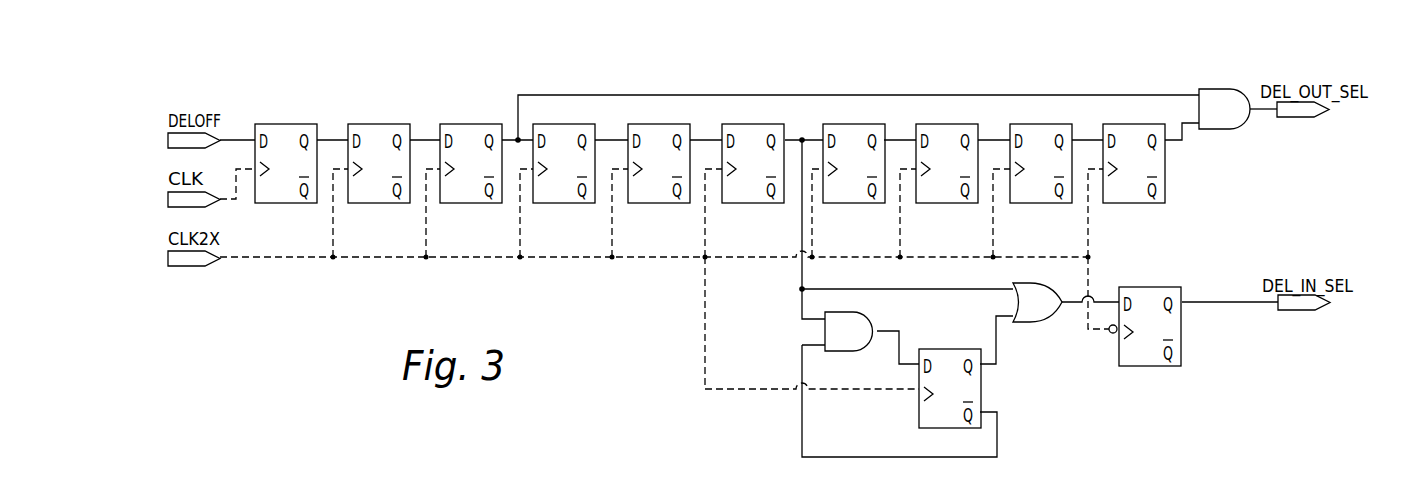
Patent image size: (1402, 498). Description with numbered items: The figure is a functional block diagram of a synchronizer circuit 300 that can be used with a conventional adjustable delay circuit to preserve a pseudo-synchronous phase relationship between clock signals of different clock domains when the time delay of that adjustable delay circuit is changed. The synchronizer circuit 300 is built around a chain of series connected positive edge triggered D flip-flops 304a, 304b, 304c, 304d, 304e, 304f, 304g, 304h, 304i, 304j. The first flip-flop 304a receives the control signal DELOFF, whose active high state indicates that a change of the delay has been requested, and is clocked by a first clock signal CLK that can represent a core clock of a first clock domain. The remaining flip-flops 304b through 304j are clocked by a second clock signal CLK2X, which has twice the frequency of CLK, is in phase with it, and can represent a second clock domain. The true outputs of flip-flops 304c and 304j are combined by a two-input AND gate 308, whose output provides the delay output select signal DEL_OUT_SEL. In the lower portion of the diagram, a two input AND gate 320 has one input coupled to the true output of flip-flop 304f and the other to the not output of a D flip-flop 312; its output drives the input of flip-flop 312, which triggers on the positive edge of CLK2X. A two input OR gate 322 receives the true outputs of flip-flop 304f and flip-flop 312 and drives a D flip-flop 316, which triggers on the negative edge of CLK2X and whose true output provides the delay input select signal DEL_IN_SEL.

The synchronizer circuit 300 is at (607, 42).
The first flip-flop 304a is at (278, 123).
The flip-flop 304b is at (371, 123).
The flip-flop 304c is at (463, 123).
The flip-flop 304d is at (556, 123).
The flip-flop 304e is at (651, 123).
The flip-flop 304f is at (745, 123).
The flip-flop 304g is at (846, 123).
The flip-flop 304h is at (939, 123).
The flip-flop 304i is at (1033, 123).
The flip-flop 304j is at (1126, 123).
The two-input AND gate 308 is at (1218, 89).
The D flip-flop 312 is at (919, 419).
The D flip-flop 316 is at (1118, 358).
The two input AND gate 320 is at (845, 352).
The two input OR gate 322 is at (1038, 322).